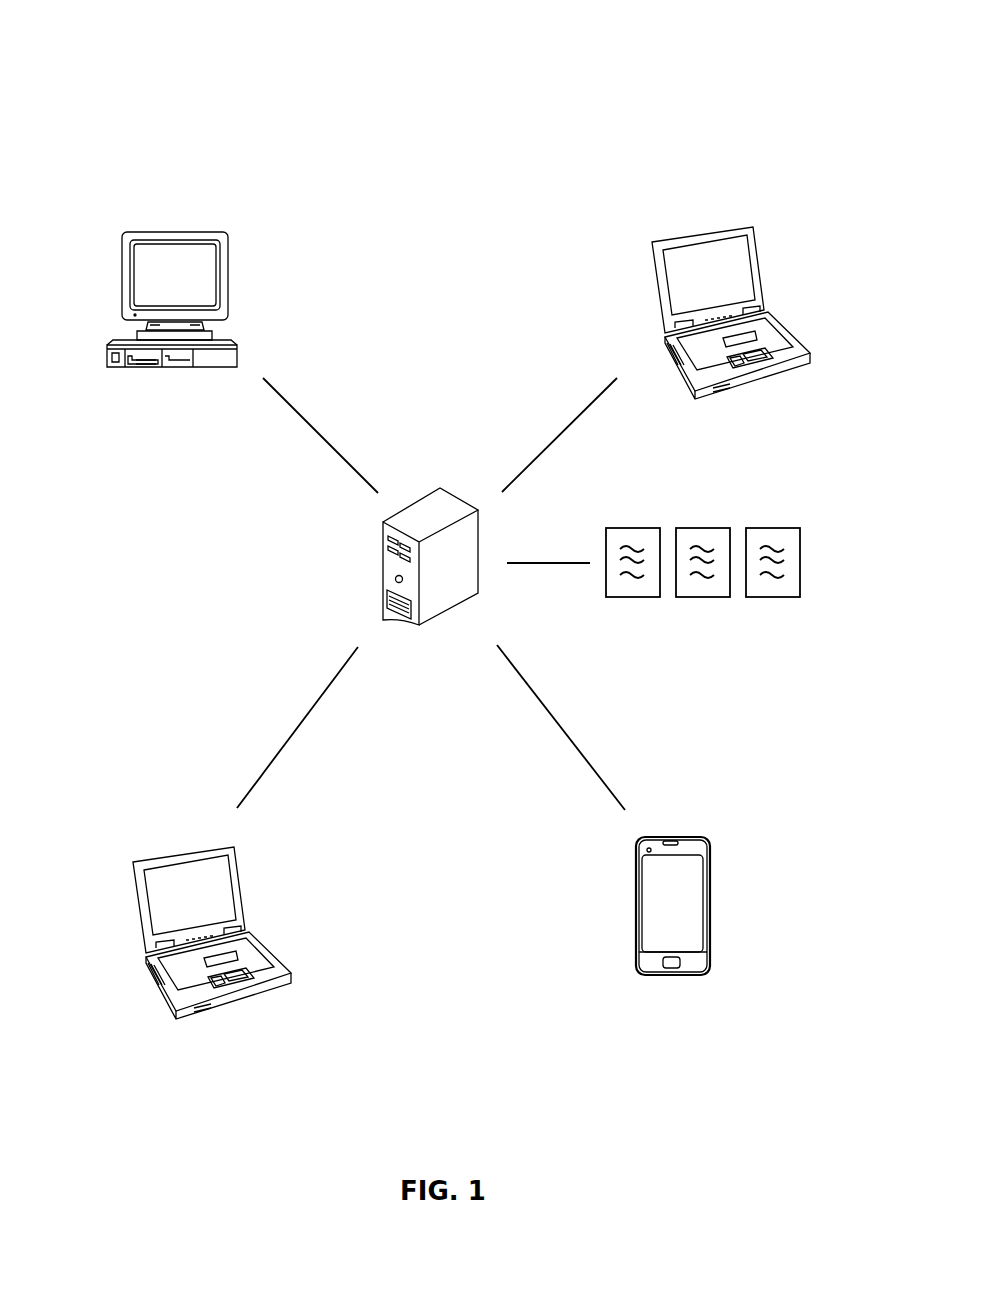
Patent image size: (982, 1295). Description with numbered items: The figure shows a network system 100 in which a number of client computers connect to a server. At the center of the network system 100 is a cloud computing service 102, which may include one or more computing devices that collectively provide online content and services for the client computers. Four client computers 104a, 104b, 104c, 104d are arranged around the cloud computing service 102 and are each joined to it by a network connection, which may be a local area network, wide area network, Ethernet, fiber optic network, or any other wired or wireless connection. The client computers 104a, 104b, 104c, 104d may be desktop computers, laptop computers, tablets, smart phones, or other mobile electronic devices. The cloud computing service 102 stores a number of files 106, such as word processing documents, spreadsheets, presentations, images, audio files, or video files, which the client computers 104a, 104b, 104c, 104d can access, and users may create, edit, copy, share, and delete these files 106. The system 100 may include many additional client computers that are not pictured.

The network system 100 is at (272, 44).
The cloud computing service 102 is at (440, 487).
The client computer 104a is at (148, 225).
The client computer 104b is at (663, 237).
The client computer 104c is at (144, 857).
The client computer 104d is at (680, 836).
The files 106 is at (693, 508).